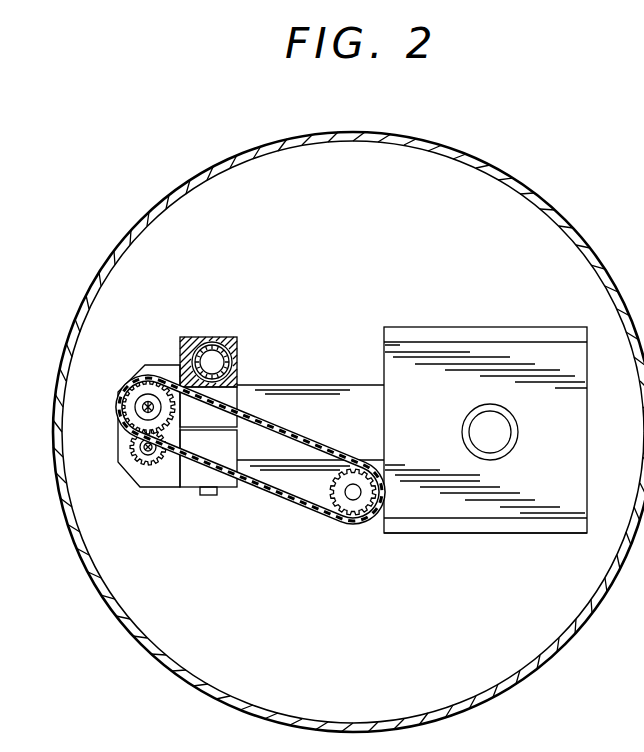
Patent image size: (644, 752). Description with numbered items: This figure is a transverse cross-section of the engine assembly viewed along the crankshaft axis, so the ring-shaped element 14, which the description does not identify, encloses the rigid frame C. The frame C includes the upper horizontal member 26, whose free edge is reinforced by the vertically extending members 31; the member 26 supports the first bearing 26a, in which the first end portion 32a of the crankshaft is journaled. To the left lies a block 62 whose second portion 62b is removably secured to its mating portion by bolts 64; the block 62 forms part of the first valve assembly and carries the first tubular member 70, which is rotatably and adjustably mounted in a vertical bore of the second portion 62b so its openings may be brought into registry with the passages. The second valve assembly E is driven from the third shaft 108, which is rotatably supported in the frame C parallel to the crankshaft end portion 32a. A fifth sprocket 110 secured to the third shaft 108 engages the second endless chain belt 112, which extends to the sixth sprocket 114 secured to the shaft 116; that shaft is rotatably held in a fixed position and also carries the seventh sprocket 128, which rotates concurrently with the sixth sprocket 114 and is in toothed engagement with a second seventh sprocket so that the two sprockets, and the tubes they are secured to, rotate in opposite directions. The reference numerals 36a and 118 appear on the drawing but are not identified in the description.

The housing ring 14 is at (592, 240).
The upper horizontal member 26 is at (550, 483).
The first bearing 26a is at (487, 406).
The vertically extending members 31 is at (470, 327).
The first end portion of crankshaft 32a is at (497, 428).
The drive shaft 36a is at (332, 377).
The block 62 is at (220, 337).
The second block portion 62b is at (186, 488).
The bolts 64 is at (206, 495).
The first tubular member 70 is at (205, 337).
The third shaft 108 is at (355, 493).
The fifth sprocket 110 is at (338, 517).
The second endless chain belt 112 is at (268, 427).
The sixth sprocket 114 is at (134, 426).
The third shaft 116 is at (140, 407).
The mounting plate 118 is at (156, 365).
The seventh sprocket 128 is at (125, 462).
The second valve assembly E is at (132, 375).
The rigid frame C is at (480, 535).